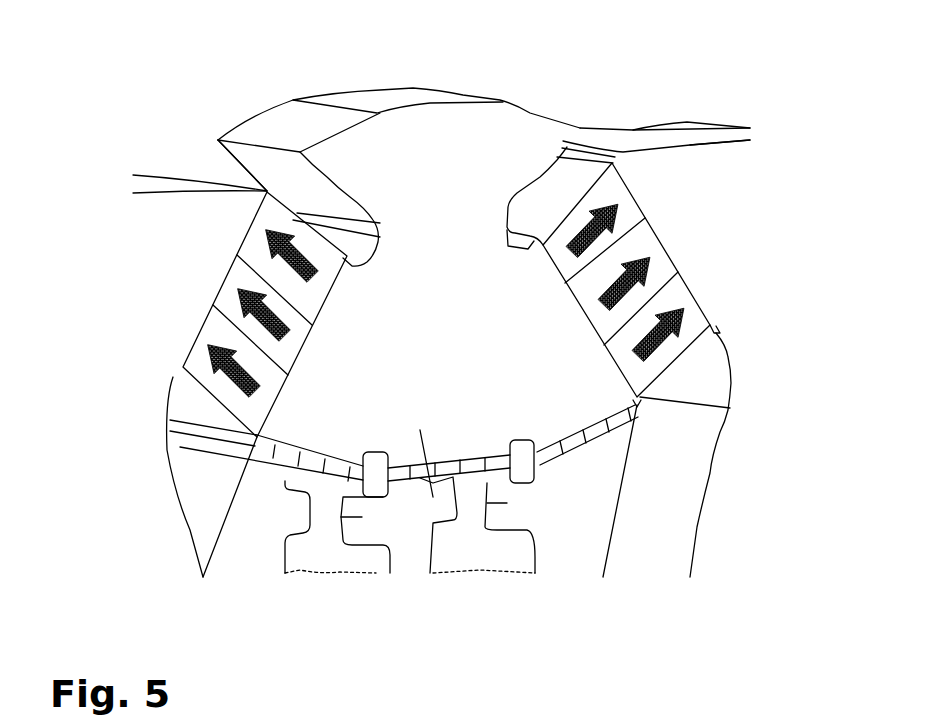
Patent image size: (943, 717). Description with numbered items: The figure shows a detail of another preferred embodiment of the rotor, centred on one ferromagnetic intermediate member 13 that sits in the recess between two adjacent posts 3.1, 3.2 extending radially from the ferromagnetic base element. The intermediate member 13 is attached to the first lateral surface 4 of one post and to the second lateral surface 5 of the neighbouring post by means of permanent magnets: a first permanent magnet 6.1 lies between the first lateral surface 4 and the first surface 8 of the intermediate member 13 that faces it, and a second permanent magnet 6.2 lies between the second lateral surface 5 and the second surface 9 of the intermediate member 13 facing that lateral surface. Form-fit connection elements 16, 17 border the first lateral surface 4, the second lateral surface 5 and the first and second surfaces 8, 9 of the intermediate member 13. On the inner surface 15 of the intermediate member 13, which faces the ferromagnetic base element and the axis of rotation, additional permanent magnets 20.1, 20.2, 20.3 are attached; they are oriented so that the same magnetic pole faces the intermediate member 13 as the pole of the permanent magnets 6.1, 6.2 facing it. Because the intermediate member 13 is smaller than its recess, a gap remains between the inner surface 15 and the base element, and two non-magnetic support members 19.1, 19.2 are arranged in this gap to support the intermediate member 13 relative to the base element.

The first housing part 3.1 is at (173, 207).
The second housing part 3.2 is at (695, 167).
The first lateral surface 4 is at (239, 248).
The second lateral surface 5 is at (653, 222).
The first permanent magnet 6.1 is at (213, 327).
The second permanent magnet 6.2 is at (660, 262).
The first surface 8 is at (315, 323).
The second surface 9 is at (565, 280).
The ferromagnetic intermediate member 13 is at (390, 140).
The inner surface 15 is at (411, 470).
The form-fit connection element 16 is at (218, 140).
The form-fit connection element 17 is at (345, 245).
The non-magnetic support member 19.1 is at (307, 560).
The non-magnetic support member 19.2 is at (483, 557).
The additional permanent magnet 20.1 is at (272, 467).
The additional permanent magnet 20.2 is at (430, 530).
The additional permanent magnet 20.3 is at (577, 430).